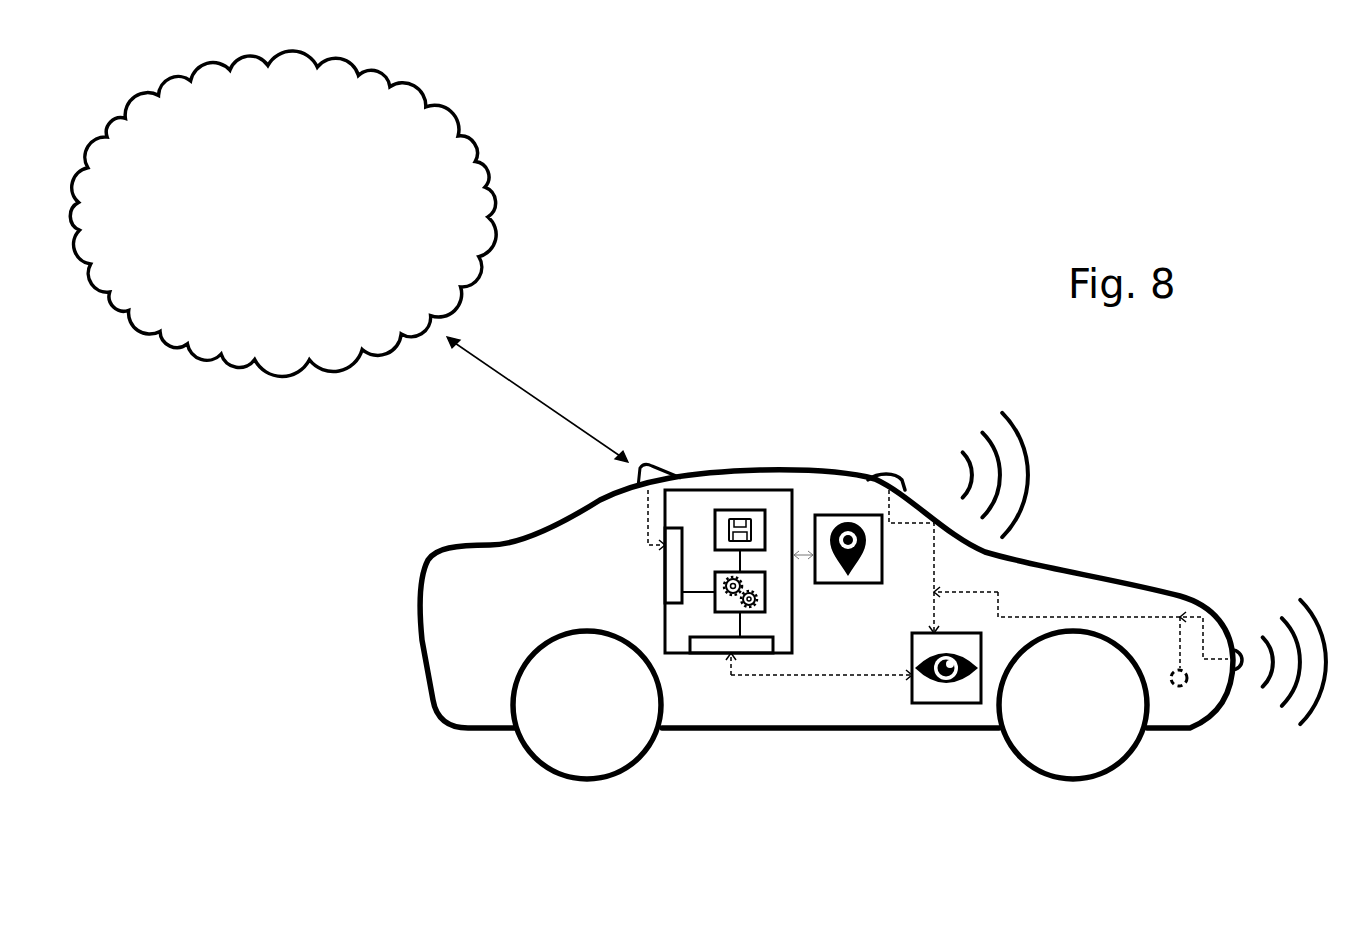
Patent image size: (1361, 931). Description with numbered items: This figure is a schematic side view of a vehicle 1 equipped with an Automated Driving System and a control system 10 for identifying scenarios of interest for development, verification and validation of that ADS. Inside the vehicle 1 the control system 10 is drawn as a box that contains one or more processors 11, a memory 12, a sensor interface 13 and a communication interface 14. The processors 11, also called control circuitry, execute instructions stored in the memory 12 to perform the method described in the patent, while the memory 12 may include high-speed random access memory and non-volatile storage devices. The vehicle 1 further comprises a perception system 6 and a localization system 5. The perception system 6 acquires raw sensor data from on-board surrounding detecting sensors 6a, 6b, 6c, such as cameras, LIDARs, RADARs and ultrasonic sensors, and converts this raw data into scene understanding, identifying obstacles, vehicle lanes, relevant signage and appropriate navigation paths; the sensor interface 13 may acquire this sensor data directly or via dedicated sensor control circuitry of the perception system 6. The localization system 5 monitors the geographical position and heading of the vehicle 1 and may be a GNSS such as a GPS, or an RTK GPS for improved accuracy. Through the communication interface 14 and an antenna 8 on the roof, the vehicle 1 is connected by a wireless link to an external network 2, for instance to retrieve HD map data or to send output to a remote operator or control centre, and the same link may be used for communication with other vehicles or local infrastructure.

The vehicle 1 is at (442, 722).
The external network 2 is at (437, 97).
The localization system 5 is at (832, 514).
The perception system 6 is at (958, 703).
The surrounding detecting sensor 6a is at (1182, 688).
The surrounding detecting sensor 6b is at (1237, 653).
The surrounding detecting sensor 6c is at (897, 478).
The antenna 8 is at (658, 465).
The control system 10 is at (718, 488).
The processor 11 is at (766, 597).
The memory 12 is at (740, 508).
The sensor interface 13 is at (713, 647).
The communication interface 14 is at (668, 577).